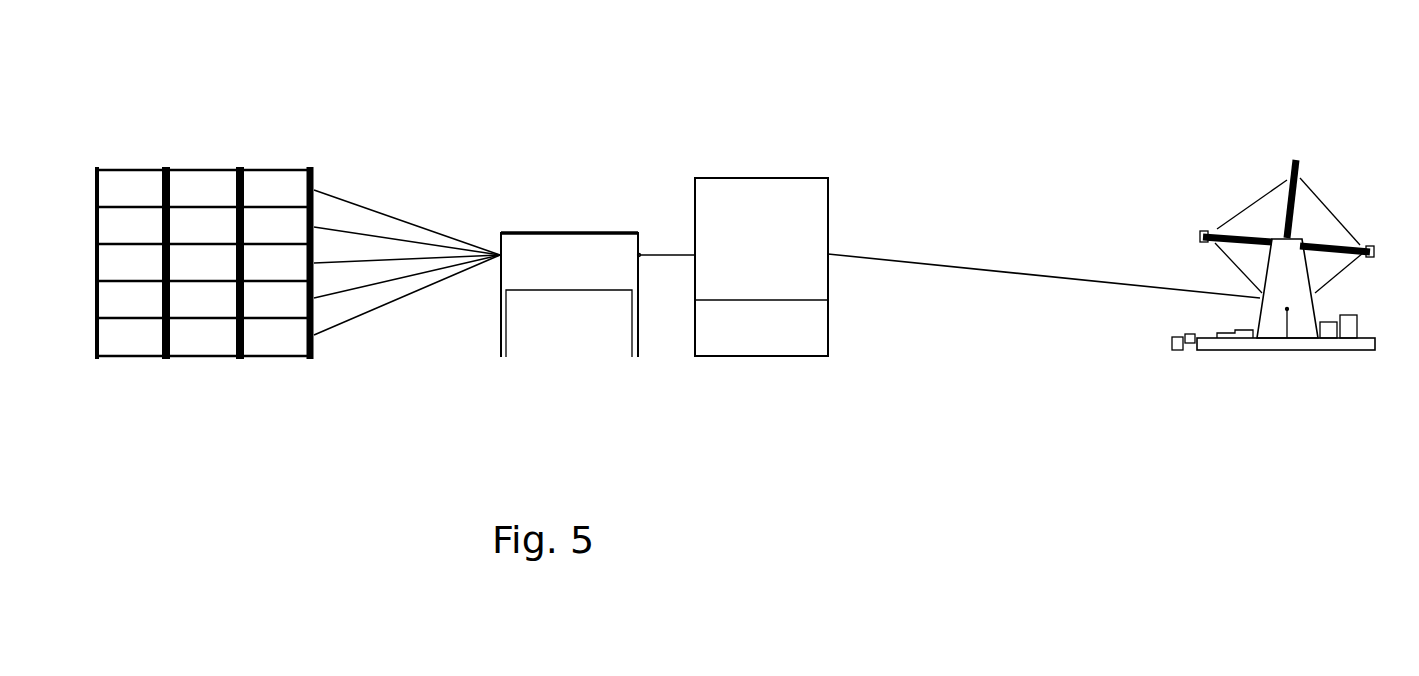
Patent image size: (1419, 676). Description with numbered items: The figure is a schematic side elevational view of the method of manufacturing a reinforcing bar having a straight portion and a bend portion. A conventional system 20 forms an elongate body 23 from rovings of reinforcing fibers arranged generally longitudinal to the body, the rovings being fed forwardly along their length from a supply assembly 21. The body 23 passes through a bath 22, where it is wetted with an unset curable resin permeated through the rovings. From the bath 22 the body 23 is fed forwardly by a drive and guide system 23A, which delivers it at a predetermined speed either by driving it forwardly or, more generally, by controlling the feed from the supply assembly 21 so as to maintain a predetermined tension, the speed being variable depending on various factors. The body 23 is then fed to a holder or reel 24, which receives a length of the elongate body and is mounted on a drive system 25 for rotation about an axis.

The conventional system 20 is at (401, 189).
The supply assembly 21 is at (292, 133).
The bath 22 is at (620, 200).
The drive and guide system 23A is at (761, 223).
The elongate body 23 is at (937, 262).
The holder or reel 24 is at (1328, 173).
The drive system 25 is at (1240, 360).